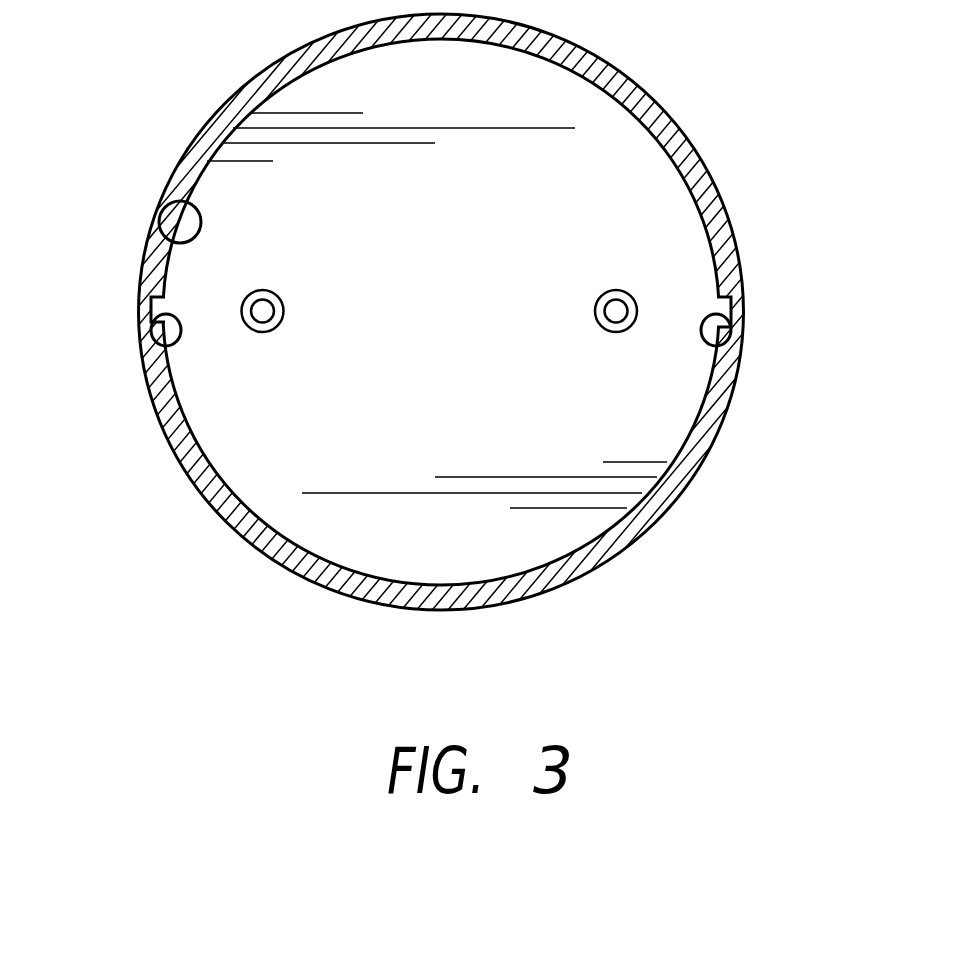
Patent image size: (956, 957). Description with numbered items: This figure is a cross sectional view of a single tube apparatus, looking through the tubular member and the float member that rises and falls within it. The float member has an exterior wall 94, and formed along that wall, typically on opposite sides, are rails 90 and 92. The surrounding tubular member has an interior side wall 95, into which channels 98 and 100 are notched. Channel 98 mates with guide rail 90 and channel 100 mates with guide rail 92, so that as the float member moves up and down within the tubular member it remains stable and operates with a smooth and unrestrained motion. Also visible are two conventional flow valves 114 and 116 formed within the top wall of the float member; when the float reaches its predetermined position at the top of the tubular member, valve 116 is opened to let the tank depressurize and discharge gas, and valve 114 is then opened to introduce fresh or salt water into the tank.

The rail 90 is at (162, 353).
The rail 92 is at (723, 347).
The exterior wall 94 is at (168, 432).
The interior side wall 95 is at (169, 204).
The channel 98 is at (140, 305).
The channel 100 is at (732, 302).
The flow valve 114 is at (616, 311).
The flow valve 116 is at (263, 311).